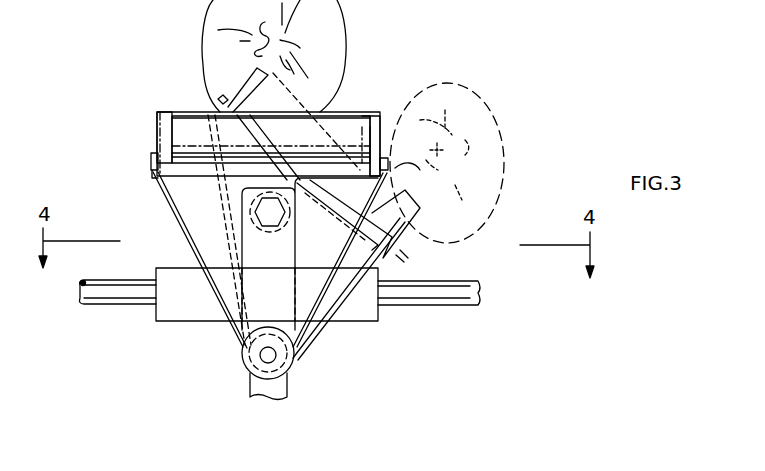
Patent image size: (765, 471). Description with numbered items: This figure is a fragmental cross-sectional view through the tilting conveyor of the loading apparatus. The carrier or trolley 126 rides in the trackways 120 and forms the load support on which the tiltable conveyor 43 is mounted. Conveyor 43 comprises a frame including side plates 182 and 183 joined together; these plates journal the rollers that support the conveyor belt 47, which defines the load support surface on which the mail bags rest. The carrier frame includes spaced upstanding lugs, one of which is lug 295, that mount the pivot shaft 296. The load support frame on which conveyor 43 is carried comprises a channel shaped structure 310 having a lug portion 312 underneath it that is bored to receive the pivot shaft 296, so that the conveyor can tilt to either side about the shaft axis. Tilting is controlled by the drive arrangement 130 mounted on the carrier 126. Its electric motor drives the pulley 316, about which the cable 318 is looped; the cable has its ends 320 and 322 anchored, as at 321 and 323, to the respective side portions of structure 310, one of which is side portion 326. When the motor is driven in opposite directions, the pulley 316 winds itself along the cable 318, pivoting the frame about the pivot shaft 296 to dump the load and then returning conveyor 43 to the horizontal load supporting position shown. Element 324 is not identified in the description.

The conveyor 43 is at (356, 88).
The conveyor belt 47 is at (355, 72).
The trackways 120 is at (388, 112).
The carrier or trolley 126 is at (140, 316).
The drive arrangement 130 is at (228, 376).
The side plate 182 is at (173, 112).
The side plate 183 is at (376, 113).
The upstanding lug 295 is at (253, 255).
The pivot shaft 296 is at (256, 213).
The channel shaped structure 310 is at (158, 128).
The lug portion 312 is at (243, 190).
The pulley 316 is at (278, 367).
The cable 318 is at (182, 242).
The cable end 320 is at (153, 177).
The anchor 321 is at (150, 160).
The cable end 322 is at (501, 151).
The anchor 323 is at (379, 128).
The cover 324 is at (160, 130).
The side portion 326 is at (414, 160).